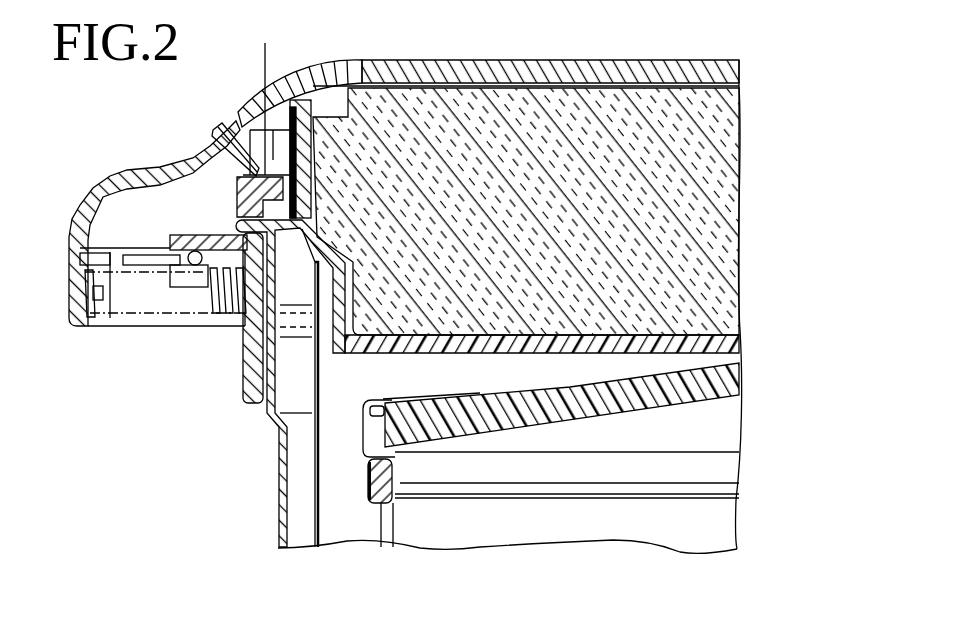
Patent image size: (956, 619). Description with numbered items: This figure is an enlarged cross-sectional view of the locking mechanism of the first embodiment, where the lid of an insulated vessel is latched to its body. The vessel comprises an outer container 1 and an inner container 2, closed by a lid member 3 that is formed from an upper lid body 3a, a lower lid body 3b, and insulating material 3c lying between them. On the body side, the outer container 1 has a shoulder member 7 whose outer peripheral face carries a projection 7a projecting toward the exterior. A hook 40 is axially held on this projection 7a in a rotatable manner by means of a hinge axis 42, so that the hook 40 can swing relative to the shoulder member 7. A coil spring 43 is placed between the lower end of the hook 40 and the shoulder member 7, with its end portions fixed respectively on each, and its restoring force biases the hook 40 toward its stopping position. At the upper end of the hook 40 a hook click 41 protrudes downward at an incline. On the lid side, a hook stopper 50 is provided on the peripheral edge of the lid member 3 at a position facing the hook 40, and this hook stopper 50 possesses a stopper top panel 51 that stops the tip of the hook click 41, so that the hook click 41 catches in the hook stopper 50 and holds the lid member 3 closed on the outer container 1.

The outer container 1 is at (270, 463).
The inner container 2 is at (372, 516).
The lid member 3 is at (573, 55).
The upper lid body 3a is at (657, 64).
The lower lid body 3b is at (740, 325).
The insulating material 3c is at (728, 187).
The shoulder member 7 is at (250, 370).
The projection 7a is at (221, 252).
The hook 40 is at (82, 192).
The hook click 41 is at (235, 122).
The hinge axis 42 is at (190, 247).
The coil spring 43 is at (96, 318).
The hook stopper 50 is at (247, 88).
The stopper top panel 51 is at (277, 118).